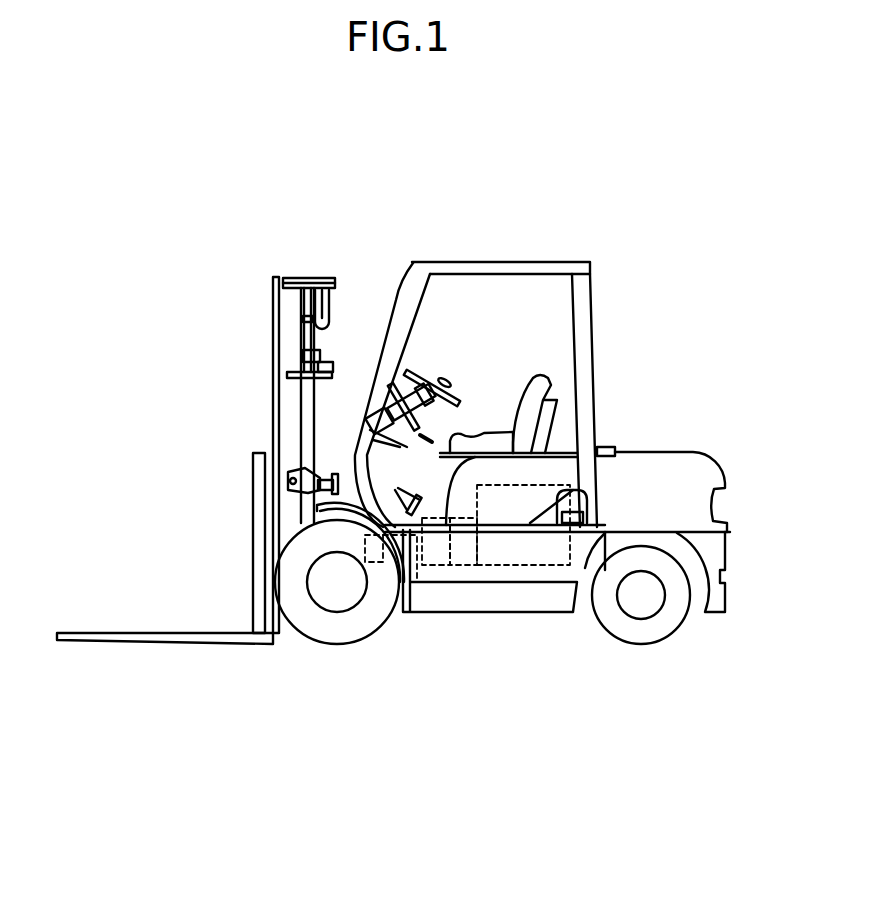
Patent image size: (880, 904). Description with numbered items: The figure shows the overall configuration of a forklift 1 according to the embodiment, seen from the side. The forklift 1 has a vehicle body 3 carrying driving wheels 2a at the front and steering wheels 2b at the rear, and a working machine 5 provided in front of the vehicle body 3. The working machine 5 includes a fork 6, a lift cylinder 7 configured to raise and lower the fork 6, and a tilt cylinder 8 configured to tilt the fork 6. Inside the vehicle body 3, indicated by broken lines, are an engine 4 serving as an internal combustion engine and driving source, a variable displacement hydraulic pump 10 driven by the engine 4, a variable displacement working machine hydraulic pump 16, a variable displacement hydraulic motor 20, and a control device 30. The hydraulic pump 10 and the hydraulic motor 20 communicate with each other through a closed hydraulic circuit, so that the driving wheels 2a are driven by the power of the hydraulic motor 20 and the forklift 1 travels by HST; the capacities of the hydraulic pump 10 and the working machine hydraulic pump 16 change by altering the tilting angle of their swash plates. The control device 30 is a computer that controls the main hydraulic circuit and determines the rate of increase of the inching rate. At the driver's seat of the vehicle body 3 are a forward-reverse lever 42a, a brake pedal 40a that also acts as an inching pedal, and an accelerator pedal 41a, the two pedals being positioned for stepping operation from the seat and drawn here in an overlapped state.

The forklift 1 is at (572, 163).
The driving wheels 2a is at (333, 642).
The steering wheels 2b is at (640, 644).
The vehicle body 3 is at (472, 603).
The engine 4 is at (530, 565).
The working machine 5 is at (340, 198).
The fork 6 is at (103, 630).
The lift cylinder 7 is at (307, 402).
The tilt cylinder 8 is at (324, 478).
The variable displacement hydraulic pump 10 is at (437, 567).
The variable displacement working machine hydraulic pump 16 is at (460, 567).
The variable displacement hydraulic motor 20 is at (417, 582).
The control device 30 is at (382, 562).
The brake pedal (inching pedal) 40a is at (393, 490).
The accelerator pedal 41a is at (409, 494).
The forward-reverse lever 42a is at (440, 413).